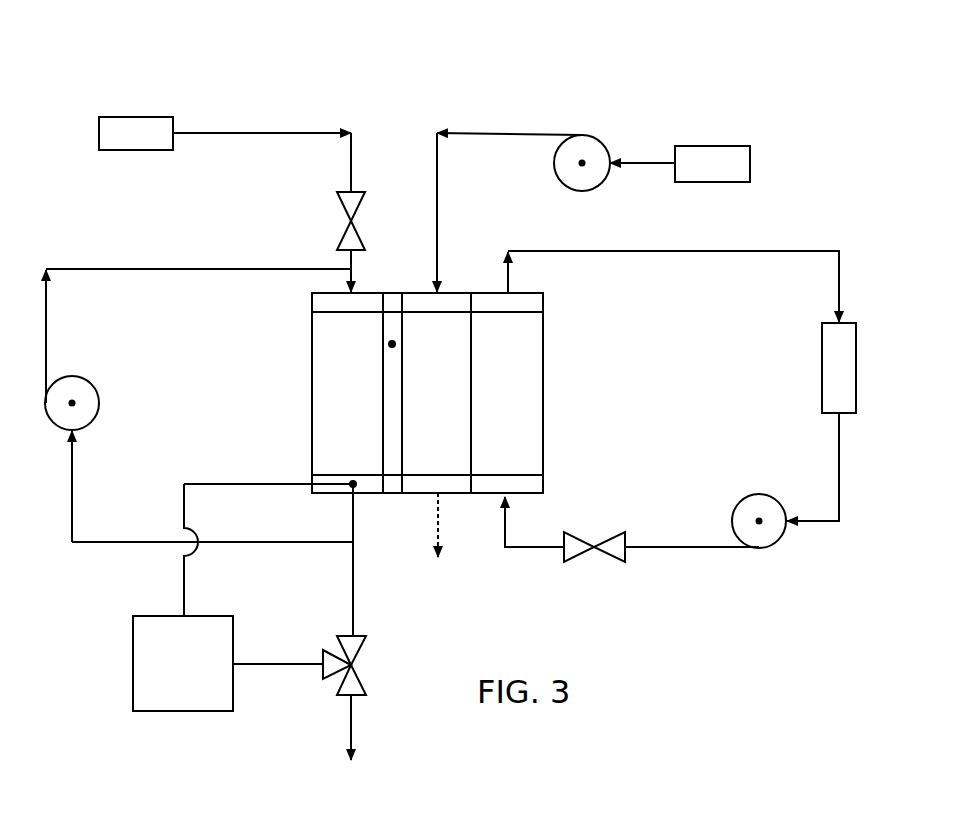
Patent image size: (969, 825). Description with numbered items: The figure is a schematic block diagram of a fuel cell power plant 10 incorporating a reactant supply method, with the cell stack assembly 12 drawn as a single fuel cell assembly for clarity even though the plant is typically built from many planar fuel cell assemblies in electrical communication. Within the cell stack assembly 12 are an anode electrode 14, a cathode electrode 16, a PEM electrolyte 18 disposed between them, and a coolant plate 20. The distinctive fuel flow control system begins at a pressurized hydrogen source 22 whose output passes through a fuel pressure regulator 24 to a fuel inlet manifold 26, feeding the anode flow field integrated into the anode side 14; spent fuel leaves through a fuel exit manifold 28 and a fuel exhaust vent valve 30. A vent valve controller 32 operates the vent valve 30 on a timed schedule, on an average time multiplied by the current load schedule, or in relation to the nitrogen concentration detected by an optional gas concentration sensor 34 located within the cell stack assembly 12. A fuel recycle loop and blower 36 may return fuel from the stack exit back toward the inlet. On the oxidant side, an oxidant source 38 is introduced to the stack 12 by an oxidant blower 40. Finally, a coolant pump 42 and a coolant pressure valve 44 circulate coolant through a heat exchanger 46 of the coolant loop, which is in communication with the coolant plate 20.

The fuel cell power plant 10 is at (219, 62).
The cell stack assembly 12 is at (580, 335).
The anode electrode 14 is at (338, 395).
The cathode electrode 16 is at (420, 440).
The PEM electrolyte 18 is at (396, 344).
The coolant plate 20 is at (505, 418).
The pressurized hydrogen source 22 is at (125, 132).
The fuel pressure regulator 24 is at (323, 218).
The fuel inlet manifold 26 is at (330, 305).
The fuel exit manifold 28 is at (365, 490).
The fuel exhaust vent valve 30 is at (380, 670).
The vent valve controller 32 is at (165, 640).
The gas concentration sensor 34 is at (350, 488).
The fuel recycle loop and blower 36 is at (103, 391).
The oxidant source 38 is at (698, 160).
The oxidant blower 40 is at (548, 188).
The coolant pump 42 is at (777, 552).
The coolant pressure valve 44 is at (599, 568).
The heat exchanger 46 is at (830, 360).